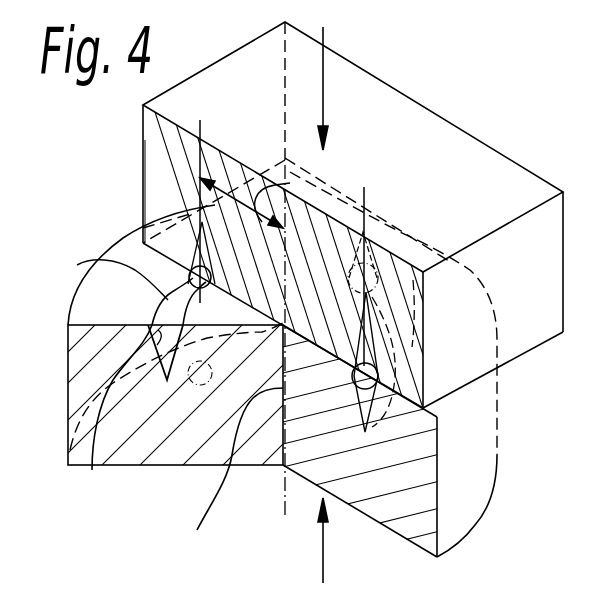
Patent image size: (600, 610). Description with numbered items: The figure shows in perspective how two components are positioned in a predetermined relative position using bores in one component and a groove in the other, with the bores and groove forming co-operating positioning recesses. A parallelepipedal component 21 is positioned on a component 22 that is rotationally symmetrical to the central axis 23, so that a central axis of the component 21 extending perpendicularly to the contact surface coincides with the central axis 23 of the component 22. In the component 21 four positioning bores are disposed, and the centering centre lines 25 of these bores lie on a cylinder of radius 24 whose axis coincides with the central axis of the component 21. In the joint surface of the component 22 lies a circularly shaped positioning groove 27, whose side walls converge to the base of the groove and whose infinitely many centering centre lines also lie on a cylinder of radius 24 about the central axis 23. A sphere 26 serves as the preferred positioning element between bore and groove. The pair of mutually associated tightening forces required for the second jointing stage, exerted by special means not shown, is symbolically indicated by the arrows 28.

The parallelepipedal component 21 is at (365, 113).
The component rotationally symmetrical to the central axis 22 is at (463, 503).
The central axis 23 is at (220, 472).
The radius 24 is at (300, 165).
The centering centre lines 25 is at (200, 189).
The sphere 26 is at (101, 274).
The positioning groove 27 is at (92, 468).
The arrows 28 is at (324, 93).